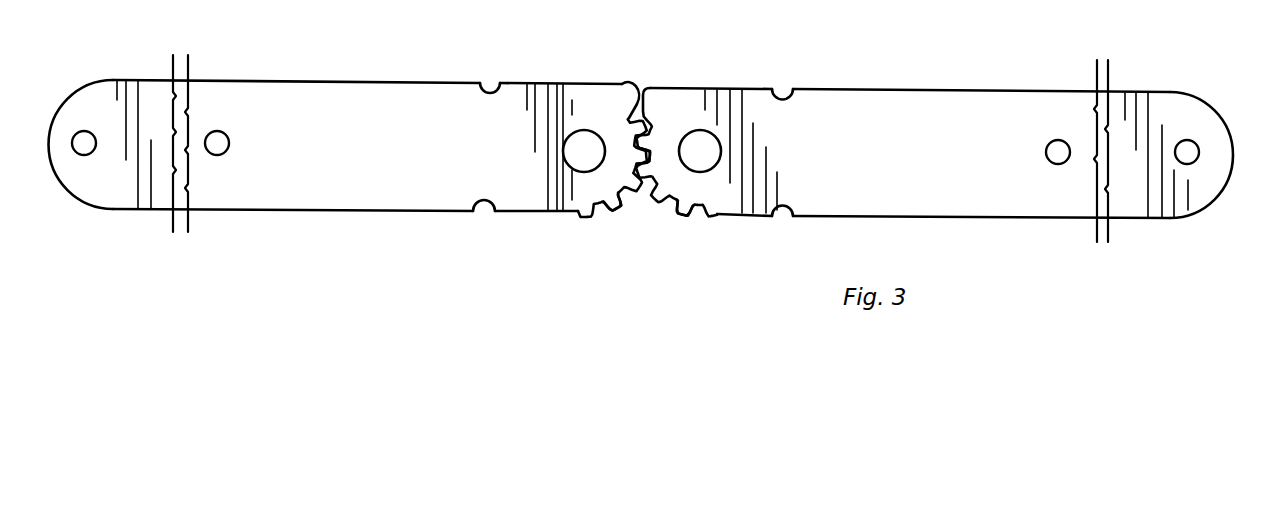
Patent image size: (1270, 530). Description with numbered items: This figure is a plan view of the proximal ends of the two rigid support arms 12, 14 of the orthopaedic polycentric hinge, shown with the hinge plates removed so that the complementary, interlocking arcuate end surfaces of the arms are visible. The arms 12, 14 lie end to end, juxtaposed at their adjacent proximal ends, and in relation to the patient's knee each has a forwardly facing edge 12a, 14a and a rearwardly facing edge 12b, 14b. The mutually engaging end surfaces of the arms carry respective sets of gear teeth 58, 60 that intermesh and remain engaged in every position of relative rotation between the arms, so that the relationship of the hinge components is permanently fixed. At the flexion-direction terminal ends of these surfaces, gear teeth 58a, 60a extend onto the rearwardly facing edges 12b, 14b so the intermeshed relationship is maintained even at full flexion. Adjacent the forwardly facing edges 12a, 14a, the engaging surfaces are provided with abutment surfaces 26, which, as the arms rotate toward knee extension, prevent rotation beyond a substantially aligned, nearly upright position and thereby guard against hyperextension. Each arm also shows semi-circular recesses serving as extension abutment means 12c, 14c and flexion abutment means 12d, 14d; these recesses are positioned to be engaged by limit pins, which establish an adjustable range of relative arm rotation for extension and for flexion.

The rigid support arm 12 is at (915, 117).
The forwardly facing edge 12a is at (1045, 90).
The rearwardly facing edge 12b is at (1078, 218).
The extension abutment means 12c is at (780, 92).
The flexion abutment means 12d is at (780, 205).
The rigid support arm 14 is at (258, 98).
The forwardly facing edge 14a is at (343, 83).
The rearwardly facing edge 14b is at (279, 212).
The extension abutment means 14c is at (488, 85).
The flexion abutment means 14d is at (490, 205).
The abutment surfaces 26 is at (628, 92).
The gear teeth 58 is at (618, 150).
The gear tooth 58a is at (608, 200).
The gear teeth 60 is at (655, 131).
The gear tooth 60a is at (682, 207).